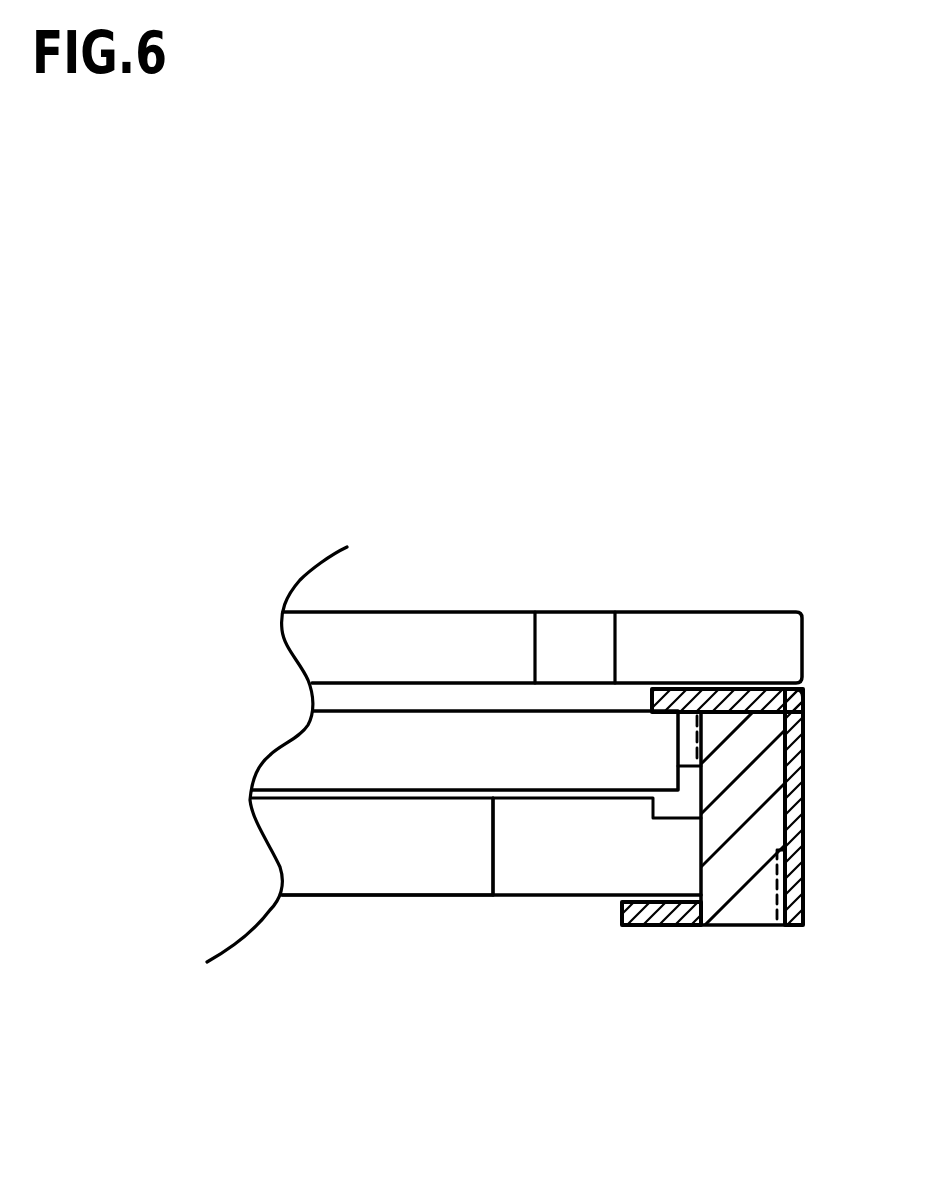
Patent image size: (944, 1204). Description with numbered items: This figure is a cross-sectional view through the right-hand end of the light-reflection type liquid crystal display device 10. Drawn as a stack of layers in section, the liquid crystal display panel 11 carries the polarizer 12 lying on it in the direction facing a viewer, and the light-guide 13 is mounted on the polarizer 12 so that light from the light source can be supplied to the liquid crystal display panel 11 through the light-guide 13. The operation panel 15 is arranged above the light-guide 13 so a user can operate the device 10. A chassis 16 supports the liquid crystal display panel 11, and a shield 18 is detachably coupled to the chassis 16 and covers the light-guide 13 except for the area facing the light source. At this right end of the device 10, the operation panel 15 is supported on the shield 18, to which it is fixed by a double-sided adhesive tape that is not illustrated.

The light-reflection type liquid crystal display device 10 is at (241, 479).
The liquid crystal display panel 11 is at (395, 855).
The polarizer 12 is at (387, 846).
The light-guide 13 is at (323, 747).
The operation panel 15 is at (322, 650).
The chassis 16 is at (747, 872).
The shield 18 is at (803, 778).